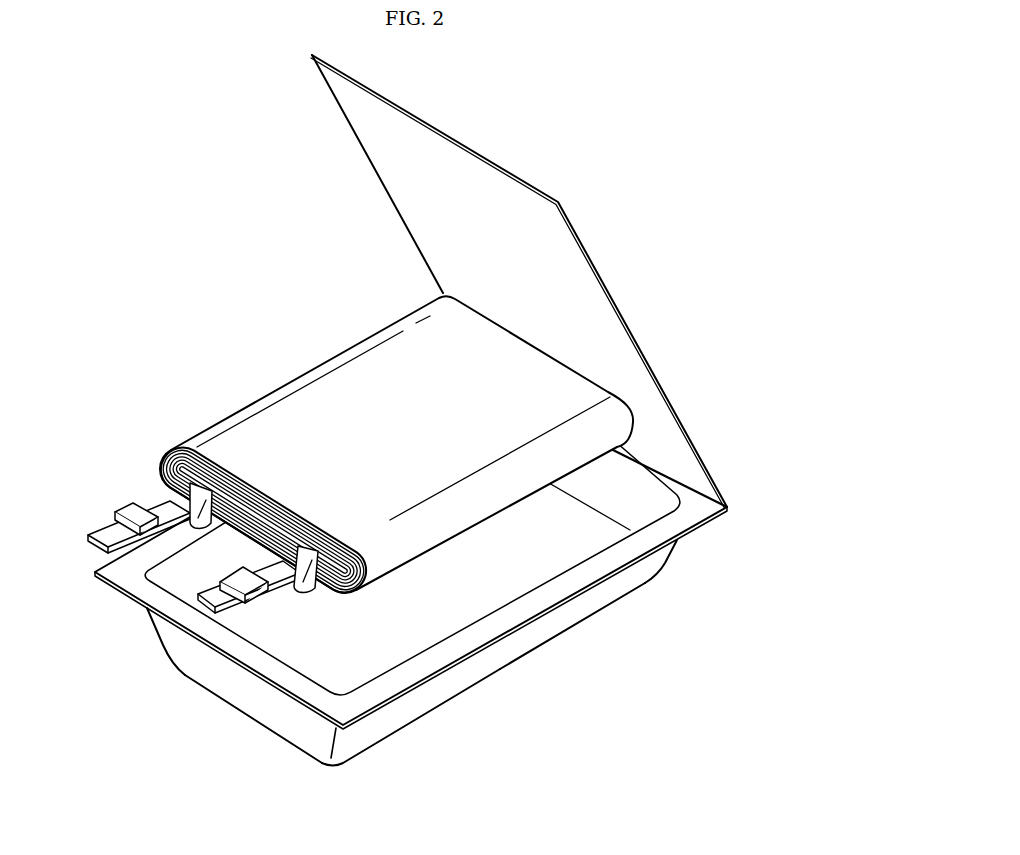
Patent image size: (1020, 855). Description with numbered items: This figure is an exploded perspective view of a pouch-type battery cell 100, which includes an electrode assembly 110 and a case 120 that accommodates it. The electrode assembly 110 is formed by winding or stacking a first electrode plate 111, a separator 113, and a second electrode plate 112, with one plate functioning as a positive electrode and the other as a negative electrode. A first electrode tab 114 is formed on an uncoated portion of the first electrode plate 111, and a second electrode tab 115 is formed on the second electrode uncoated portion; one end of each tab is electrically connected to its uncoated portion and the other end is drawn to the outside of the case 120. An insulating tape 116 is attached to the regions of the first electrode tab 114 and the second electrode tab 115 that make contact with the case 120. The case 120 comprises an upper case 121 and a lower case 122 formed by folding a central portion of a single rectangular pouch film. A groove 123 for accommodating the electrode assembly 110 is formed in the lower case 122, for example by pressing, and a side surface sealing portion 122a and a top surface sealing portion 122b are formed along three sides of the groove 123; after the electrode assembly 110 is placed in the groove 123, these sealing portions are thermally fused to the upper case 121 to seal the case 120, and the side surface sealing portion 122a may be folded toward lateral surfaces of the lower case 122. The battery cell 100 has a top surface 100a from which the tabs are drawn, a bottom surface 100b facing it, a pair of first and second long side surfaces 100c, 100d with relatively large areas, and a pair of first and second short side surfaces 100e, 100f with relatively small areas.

The battery cell 100 is at (186, 226).
The top surface 100a is at (198, 683).
The bottom surface 100b is at (680, 575).
The first long side surface 100c is at (378, 755).
The second long side surface 100d is at (644, 325).
The first short side surface 100e is at (148, 640).
The second short side surface 100f is at (594, 618).
The electrode assembly 110 is at (220, 366).
The first electrode plate 111 is at (167, 447).
The second electrode plate 112 is at (167, 475).
The separator 113 is at (163, 462).
The first electrode tab 114 is at (185, 513).
The second electrode tab 115 is at (310, 593).
The insulating tape 116 is at (130, 505).
The case 120 is at (803, 514).
The upper case 121 is at (700, 483).
The lower case 122 is at (662, 557).
The side surface sealing portion 122a is at (598, 568).
The top surface sealing portion 122b is at (290, 678).
The groove 123 is at (444, 608).